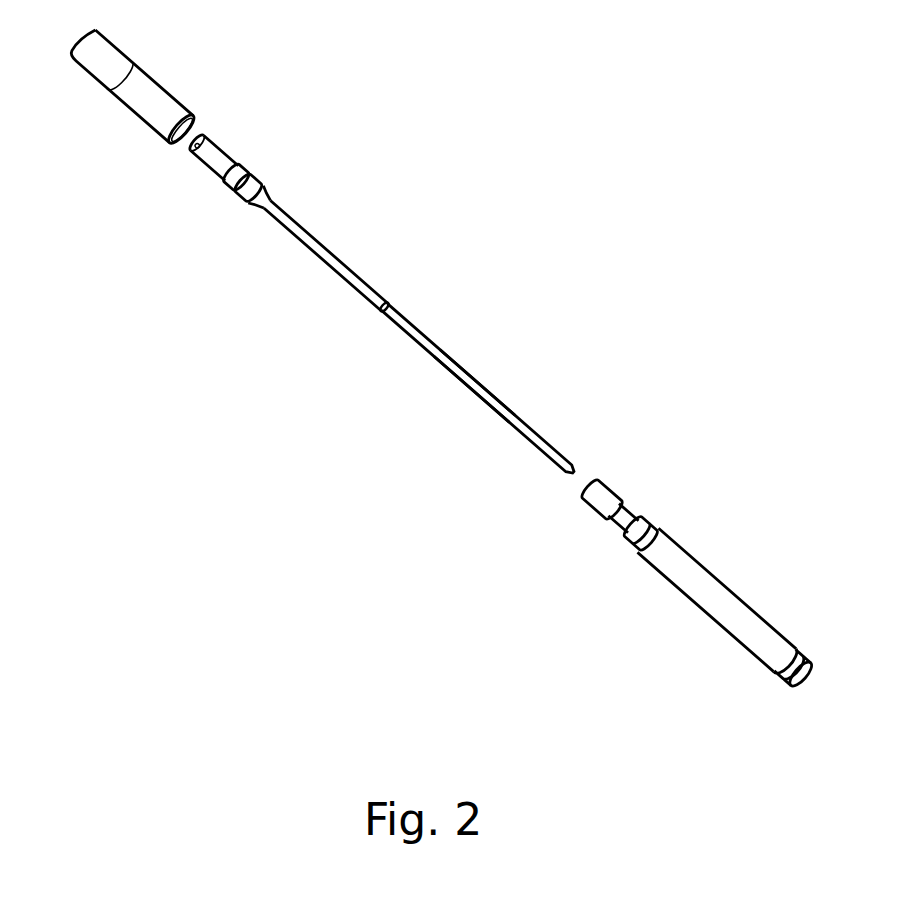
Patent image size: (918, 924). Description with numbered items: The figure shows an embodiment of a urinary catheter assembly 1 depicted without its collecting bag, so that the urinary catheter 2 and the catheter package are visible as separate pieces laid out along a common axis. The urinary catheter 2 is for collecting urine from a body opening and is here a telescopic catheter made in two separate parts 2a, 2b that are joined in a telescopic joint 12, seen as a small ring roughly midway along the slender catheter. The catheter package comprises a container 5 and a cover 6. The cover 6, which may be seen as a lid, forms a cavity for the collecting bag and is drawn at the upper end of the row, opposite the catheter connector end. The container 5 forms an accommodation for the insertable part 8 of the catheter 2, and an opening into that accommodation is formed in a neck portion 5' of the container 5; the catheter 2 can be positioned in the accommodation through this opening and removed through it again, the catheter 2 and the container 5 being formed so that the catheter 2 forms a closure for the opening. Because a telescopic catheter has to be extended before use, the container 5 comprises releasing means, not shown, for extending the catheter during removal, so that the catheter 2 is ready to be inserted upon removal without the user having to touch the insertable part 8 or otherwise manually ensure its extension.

The urinary catheter assembly 1 is at (397, 148).
The urinary catheter 2 is at (209, 136).
The catheter part 2a is at (503, 414).
The catheter part 2b is at (297, 240).
The container 5 is at (726, 609).
The neck portion 5' is at (627, 488).
The cover 6 is at (120, 80).
The insertable part 8 is at (445, 356).
The telescopic joint 12 is at (371, 290).